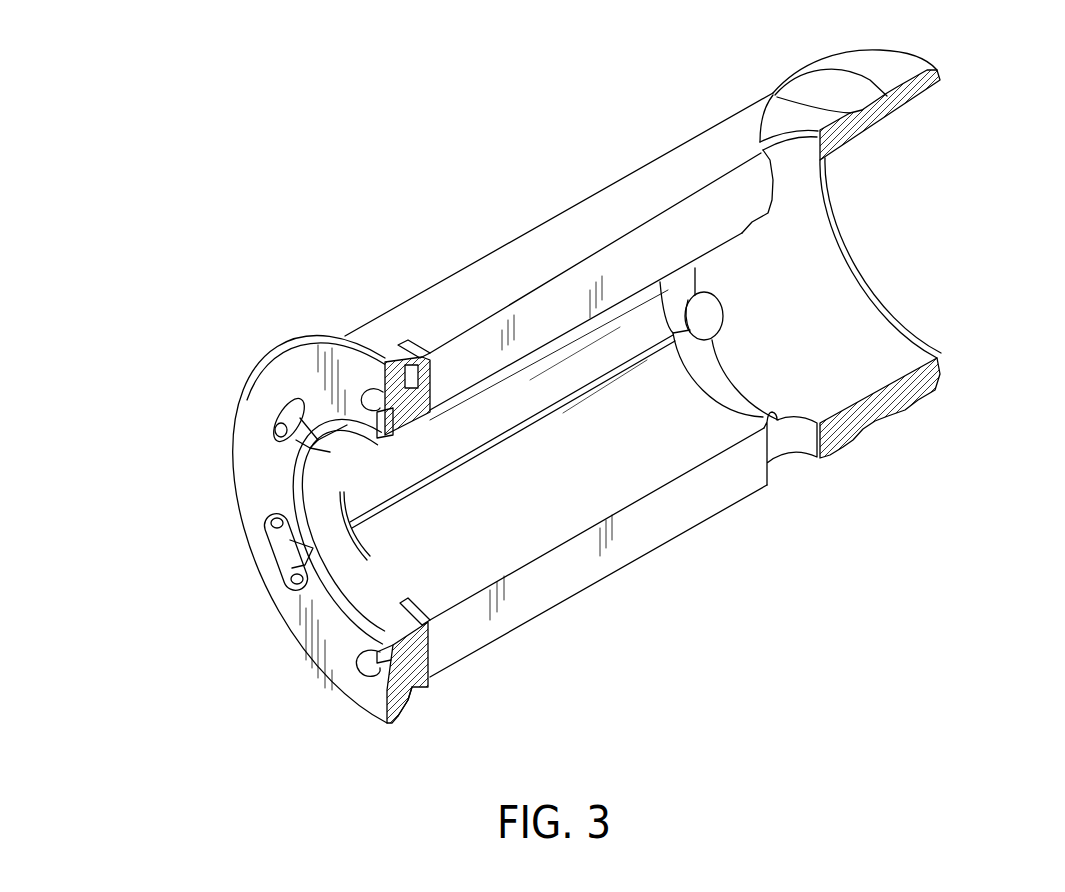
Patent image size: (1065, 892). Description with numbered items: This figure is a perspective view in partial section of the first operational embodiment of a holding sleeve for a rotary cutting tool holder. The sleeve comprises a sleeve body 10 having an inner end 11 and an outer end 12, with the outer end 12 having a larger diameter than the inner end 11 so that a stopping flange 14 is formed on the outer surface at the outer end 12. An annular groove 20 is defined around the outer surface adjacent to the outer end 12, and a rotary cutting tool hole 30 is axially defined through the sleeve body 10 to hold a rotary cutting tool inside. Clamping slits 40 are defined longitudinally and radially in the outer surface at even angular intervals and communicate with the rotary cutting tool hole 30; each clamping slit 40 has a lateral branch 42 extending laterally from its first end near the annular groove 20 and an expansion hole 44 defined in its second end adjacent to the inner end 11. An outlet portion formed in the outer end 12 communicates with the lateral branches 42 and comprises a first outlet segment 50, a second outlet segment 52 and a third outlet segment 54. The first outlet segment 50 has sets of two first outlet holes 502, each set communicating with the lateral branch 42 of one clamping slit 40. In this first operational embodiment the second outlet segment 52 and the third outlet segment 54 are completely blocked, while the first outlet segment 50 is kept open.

The sleeve body 10 is at (364, 208).
The inner end 11 is at (938, 365).
The outer end 12 is at (318, 643).
The stopping flange 14 is at (388, 726).
The annular groove 20 is at (414, 690).
The rotary cutting tool hole 30 is at (666, 423).
The clamping slit 40 is at (572, 284).
The lateral branch 42 is at (428, 600).
The expansion hole 44 is at (780, 150).
The first outlet segment 50 is at (277, 410).
The first outlet hole 502 is at (277, 431).
The second outlet segment 52 is at (297, 550).
The third outlet segment 54 is at (298, 483).